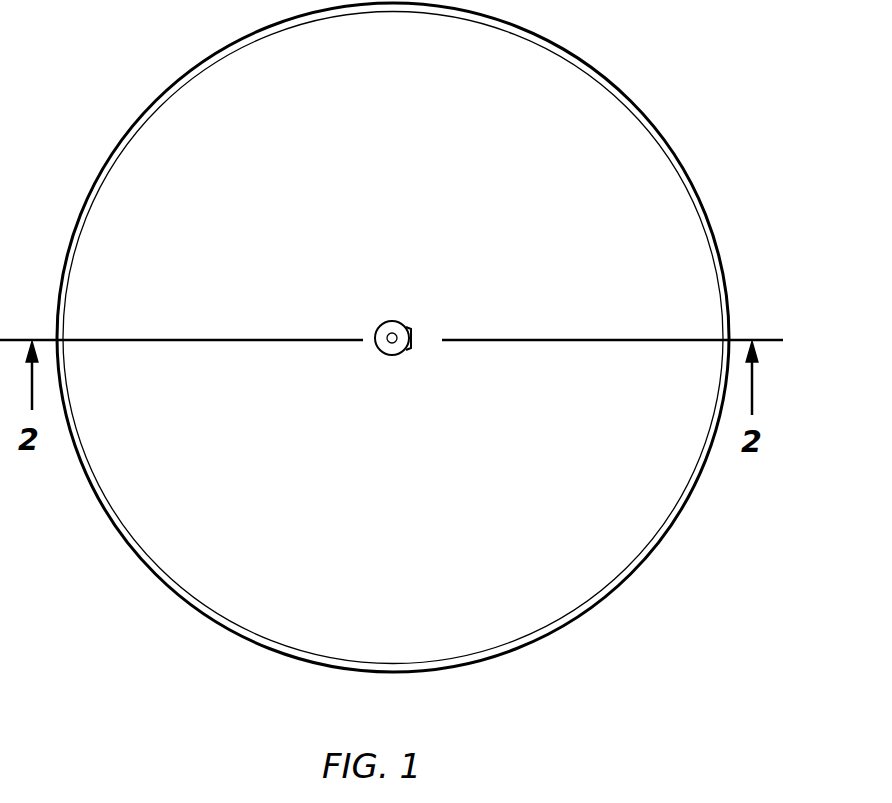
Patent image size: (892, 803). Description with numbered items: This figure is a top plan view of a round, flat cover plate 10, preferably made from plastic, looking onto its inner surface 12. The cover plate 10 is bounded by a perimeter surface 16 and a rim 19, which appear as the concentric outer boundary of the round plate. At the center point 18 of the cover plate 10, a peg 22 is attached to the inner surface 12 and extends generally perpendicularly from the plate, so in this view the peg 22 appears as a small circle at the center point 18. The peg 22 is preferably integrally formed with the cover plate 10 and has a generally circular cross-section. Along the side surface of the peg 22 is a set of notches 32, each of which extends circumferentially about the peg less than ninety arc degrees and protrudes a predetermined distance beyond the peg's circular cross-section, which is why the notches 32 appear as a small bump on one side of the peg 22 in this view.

The cover plate 10 is at (683, 65).
The inner surface 12 is at (410, 585).
The perimeter surface 16 is at (669, 160).
The center point 18 is at (392, 338).
The rim 19 is at (592, 594).
The peg 22 is at (392, 321).
The notches 32 is at (411, 338).